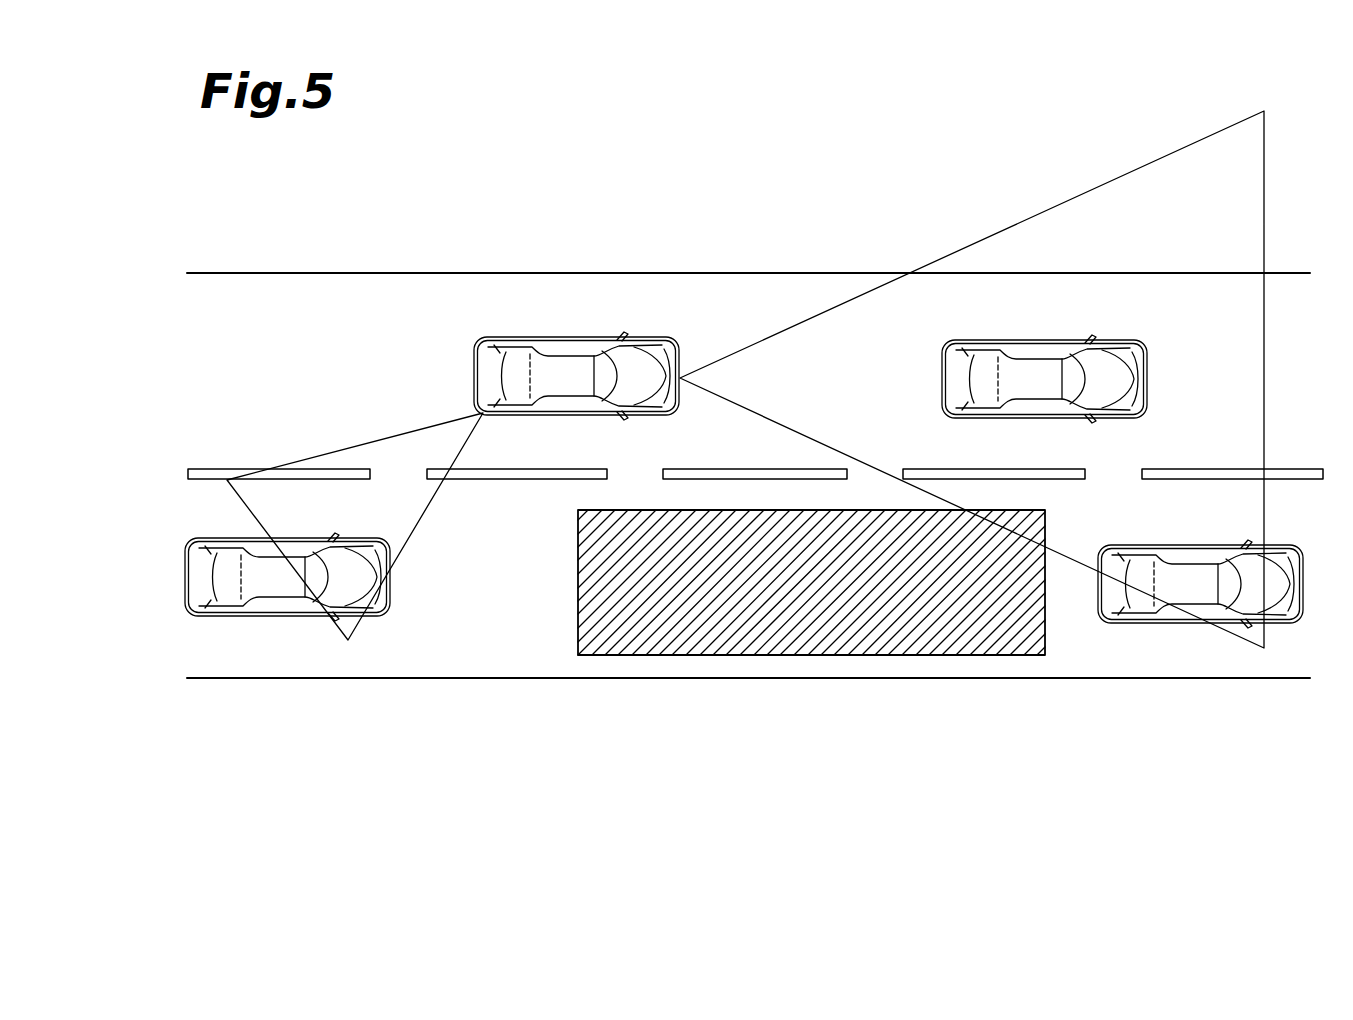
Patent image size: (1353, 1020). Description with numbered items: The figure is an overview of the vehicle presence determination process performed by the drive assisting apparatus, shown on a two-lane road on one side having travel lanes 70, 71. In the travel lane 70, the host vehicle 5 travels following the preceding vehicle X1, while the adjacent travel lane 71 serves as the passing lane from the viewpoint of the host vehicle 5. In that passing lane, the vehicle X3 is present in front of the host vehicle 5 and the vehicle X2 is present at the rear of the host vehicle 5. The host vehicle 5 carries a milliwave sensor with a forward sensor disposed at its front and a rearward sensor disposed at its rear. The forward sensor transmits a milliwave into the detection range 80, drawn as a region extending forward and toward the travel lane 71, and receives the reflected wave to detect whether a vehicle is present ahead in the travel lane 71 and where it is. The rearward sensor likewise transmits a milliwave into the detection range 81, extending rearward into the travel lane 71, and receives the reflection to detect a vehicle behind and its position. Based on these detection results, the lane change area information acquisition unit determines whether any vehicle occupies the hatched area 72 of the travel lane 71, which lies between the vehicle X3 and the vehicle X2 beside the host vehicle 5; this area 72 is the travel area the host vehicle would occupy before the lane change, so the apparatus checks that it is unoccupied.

The host vehicle 5 is at (620, 340).
The travel lane 70 is at (293, 287).
The travel lane 71 is at (245, 655).
The area 72 is at (667, 635).
The detection range 80 is at (1000, 233).
The detection range 81 is at (403, 548).
The preceding vehicle X1 is at (1098, 340).
The vehicle X2 is at (217, 540).
The vehicle X3 is at (1173, 622).